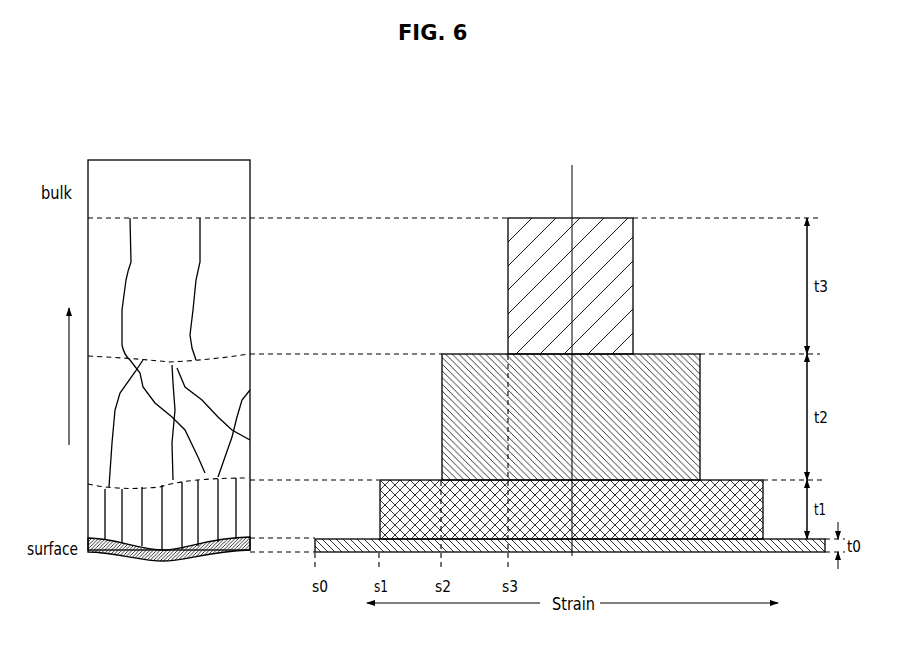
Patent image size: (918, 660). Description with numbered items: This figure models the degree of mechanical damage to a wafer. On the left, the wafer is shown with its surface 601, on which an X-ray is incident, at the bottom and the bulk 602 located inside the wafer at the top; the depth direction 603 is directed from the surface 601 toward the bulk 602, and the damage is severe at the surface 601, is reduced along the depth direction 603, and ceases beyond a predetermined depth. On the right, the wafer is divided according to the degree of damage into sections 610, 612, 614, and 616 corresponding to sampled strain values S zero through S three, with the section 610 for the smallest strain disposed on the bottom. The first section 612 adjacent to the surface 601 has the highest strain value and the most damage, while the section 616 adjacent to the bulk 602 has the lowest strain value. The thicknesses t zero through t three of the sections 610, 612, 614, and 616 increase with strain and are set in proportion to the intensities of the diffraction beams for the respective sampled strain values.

The surface of the wafer 601 is at (122, 556).
The bulk 602 is at (181, 160).
The depth direction 603 is at (69, 376).
The section 610 is at (820, 537).
The first section 612 is at (735, 488).
The second section 614 is at (673, 362).
The third section 616 is at (605, 226).